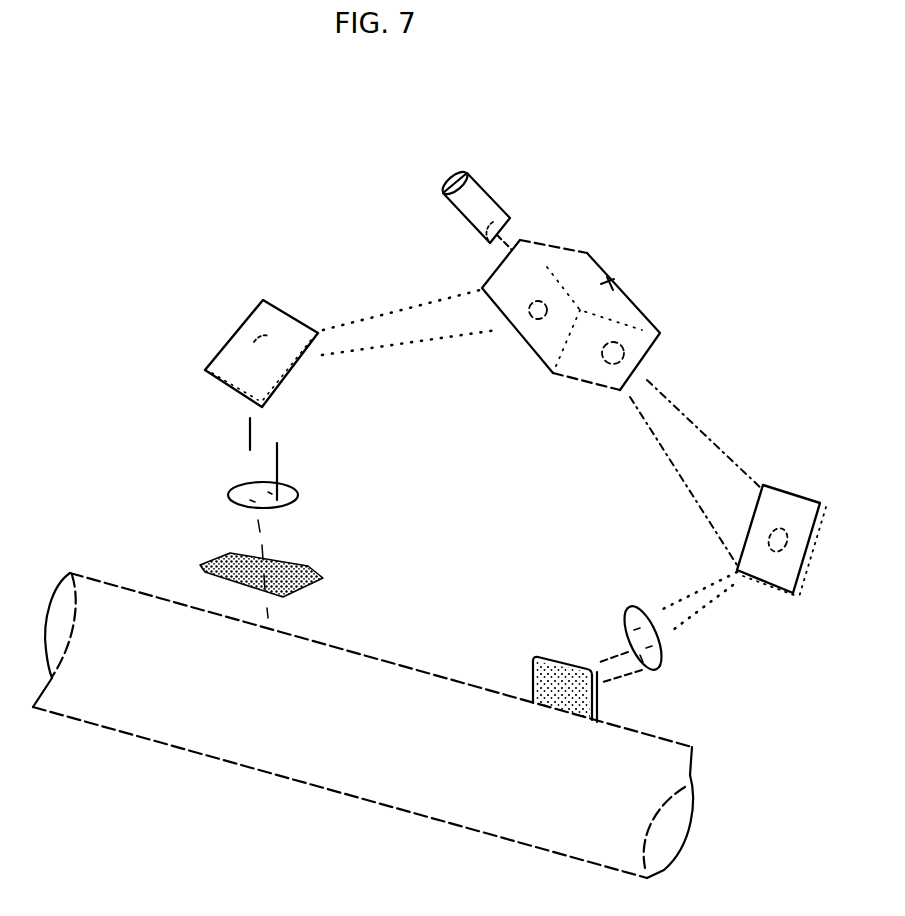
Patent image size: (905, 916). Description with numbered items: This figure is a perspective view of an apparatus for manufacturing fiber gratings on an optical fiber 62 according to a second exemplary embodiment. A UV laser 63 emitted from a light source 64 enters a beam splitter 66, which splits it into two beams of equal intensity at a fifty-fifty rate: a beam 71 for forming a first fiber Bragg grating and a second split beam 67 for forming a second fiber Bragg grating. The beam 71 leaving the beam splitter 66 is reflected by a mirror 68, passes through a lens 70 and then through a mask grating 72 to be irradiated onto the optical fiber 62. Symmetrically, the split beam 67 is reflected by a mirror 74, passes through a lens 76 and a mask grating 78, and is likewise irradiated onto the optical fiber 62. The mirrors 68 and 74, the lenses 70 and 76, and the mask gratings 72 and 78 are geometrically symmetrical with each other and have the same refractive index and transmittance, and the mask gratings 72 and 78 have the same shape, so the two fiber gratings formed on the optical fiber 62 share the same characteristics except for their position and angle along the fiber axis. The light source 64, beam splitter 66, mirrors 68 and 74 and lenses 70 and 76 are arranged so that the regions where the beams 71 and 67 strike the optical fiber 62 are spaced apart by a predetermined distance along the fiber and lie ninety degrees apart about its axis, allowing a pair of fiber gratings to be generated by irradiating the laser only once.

The optical fiber 62 is at (387, 703).
The UV laser 63 is at (510, 230).
The light source 64 is at (483, 190).
The beam splitter 66 is at (614, 279).
The split beam 67 is at (667, 407).
The mirror 68 is at (258, 318).
The lens 70 is at (237, 485).
The beam for forming a first FBG 71 is at (400, 325).
The mask grating 72 is at (303, 563).
The mirror 74 is at (792, 500).
The lens 76 is at (667, 652).
The mask grating 78 is at (552, 663).